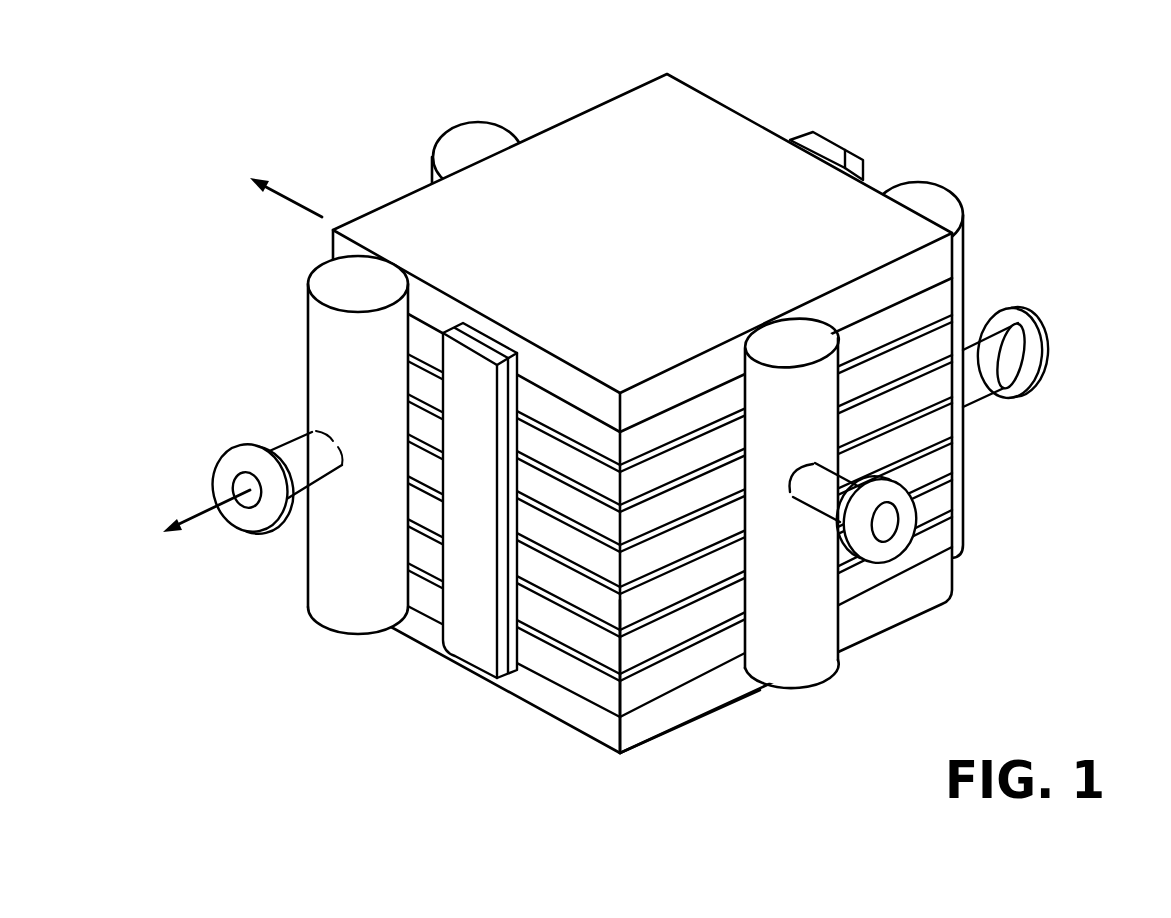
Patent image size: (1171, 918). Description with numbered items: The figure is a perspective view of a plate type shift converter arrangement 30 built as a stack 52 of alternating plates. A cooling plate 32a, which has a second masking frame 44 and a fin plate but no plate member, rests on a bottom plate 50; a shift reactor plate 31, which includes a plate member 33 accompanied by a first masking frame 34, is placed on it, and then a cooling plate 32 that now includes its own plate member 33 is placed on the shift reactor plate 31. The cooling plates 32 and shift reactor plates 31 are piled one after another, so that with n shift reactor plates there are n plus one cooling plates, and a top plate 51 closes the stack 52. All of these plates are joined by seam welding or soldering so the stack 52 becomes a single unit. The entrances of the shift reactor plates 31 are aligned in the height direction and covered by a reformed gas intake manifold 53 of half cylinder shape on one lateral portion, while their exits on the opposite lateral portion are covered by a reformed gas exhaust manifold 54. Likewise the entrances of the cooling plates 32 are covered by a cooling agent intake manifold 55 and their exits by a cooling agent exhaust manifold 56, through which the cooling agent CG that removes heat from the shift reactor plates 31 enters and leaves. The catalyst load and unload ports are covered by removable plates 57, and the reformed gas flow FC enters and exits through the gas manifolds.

The shift converter arrangement 30 is at (812, 103).
The shift reactor plate 31 is at (933, 425).
The cooling plate 32 is at (933, 467).
The cooling plate 32a is at (938, 545).
The plate member 33 is at (568, 630).
The first masking frame 34 is at (592, 623).
The second masking frame 44 is at (650, 603).
The bottom plate 50 is at (733, 703).
The top plate 51 is at (682, 93).
The stack 52 is at (592, 88).
The reformed gas intake manifold 53 is at (822, 663).
The reformed gas exhaust manifold 54 is at (458, 140).
The cooling agent intake manifold 55 is at (952, 208).
The cooling agent exhaust manifold 56 is at (322, 593).
The plate 57 is at (860, 157).
The fuel gas connection FC is at (886, 527).
The cooling agent CG is at (1061, 332).